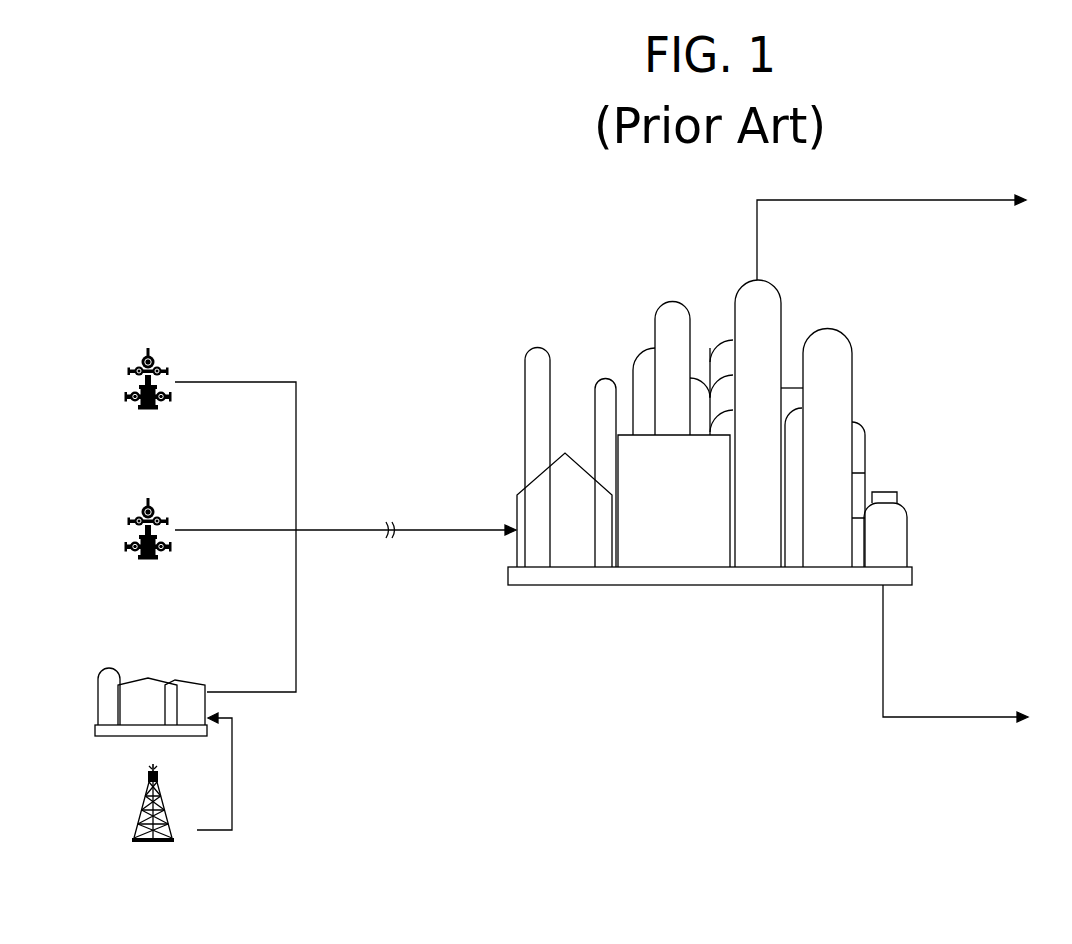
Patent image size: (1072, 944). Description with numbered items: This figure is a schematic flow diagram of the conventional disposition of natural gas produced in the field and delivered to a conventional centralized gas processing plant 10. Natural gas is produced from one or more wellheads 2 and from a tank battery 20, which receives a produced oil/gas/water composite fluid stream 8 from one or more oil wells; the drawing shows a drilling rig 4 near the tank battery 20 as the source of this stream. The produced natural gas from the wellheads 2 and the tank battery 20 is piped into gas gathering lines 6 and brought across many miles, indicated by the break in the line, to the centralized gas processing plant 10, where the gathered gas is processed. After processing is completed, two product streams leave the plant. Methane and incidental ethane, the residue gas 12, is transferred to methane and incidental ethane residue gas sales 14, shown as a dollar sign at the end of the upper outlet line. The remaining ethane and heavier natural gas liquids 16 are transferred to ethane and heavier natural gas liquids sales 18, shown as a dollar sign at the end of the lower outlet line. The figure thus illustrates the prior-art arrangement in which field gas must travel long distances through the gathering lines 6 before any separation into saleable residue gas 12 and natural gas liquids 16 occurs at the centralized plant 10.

The wellhead 2 is at (148, 474).
The drilling rig 4 is at (153, 816).
The gas gathering lines 6 is at (428, 530).
The produced oil/gas/water composite fluid stream 8 is at (232, 772).
The centralized gas processing plant 10 is at (576, 585).
The methane and incidental ethane (residue gas) 12 is at (757, 233).
The methane and incidental ethane (residue gas) sales 14 is at (1047, 216).
The ethane and heavier natural gas liquids (NGL) 16 is at (883, 620).
The ethane and heavier natural gas liquids (NGL) sales 18 is at (1047, 731).
The tank battery 20 is at (113, 737).